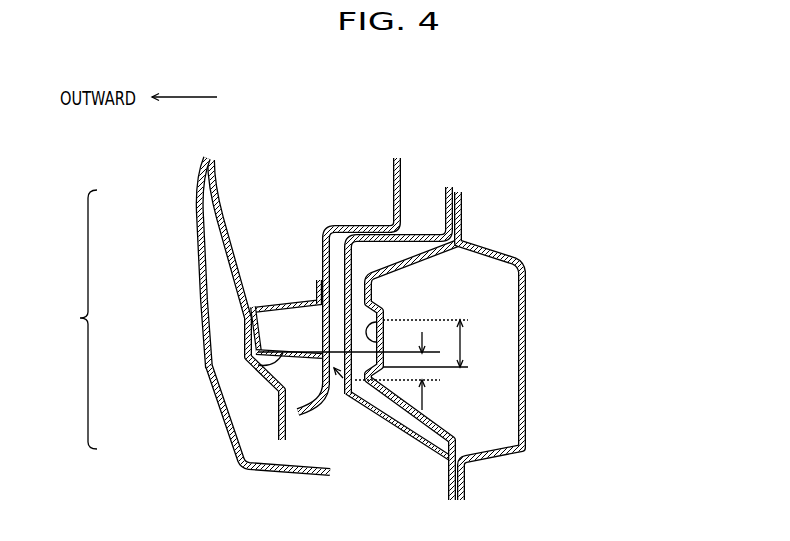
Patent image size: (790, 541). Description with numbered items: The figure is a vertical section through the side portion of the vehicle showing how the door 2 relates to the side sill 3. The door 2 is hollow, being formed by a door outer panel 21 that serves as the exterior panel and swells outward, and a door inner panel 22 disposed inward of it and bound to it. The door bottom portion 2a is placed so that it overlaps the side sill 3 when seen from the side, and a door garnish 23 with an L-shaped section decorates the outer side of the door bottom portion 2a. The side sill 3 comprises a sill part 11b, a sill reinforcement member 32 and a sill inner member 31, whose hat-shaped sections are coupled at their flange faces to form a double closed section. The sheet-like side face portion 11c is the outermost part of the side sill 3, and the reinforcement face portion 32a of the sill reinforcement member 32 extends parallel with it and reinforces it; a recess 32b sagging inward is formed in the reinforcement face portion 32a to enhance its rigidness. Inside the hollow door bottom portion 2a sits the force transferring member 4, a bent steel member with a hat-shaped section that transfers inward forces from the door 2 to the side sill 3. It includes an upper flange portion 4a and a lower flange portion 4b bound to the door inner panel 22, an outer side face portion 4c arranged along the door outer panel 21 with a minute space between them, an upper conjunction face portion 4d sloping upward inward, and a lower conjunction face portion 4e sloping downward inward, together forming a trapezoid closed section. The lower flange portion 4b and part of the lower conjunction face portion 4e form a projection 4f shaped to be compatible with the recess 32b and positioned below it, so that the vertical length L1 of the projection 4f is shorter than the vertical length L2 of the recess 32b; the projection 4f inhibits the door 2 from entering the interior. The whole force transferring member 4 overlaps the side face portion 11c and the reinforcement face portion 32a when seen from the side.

The door 2 is at (172, 177).
The door outer panel 21 is at (203, 180).
The door garnish 23 is at (215, 420).
The door bottom portion 2a is at (72, 319).
The side sill 3 is at (530, 218).
The sill inner member 31 is at (528, 323).
The sill reinforcement member 32 is at (408, 264).
The reinforcement face portion 32a is at (350, 262).
The recess 32b is at (366, 312).
The force transferring member 4 is at (297, 292).
The upper flange portion 4a is at (318, 287).
The lower flange portion 4b is at (315, 365).
The outer side face portion 4c is at (258, 335).
The upper conjunction face portion 4d is at (275, 307).
The lower conjunction face portion 4e is at (262, 362).
The projection 4f is at (346, 398).
The sill part 11b is at (417, 217).
The side face portion 11c is at (337, 220).
The door inner panel 22 is at (403, 167).
The vertical length of the projection L1 is at (356, 373).
The vertical length of the recess L2 is at (437, 343).